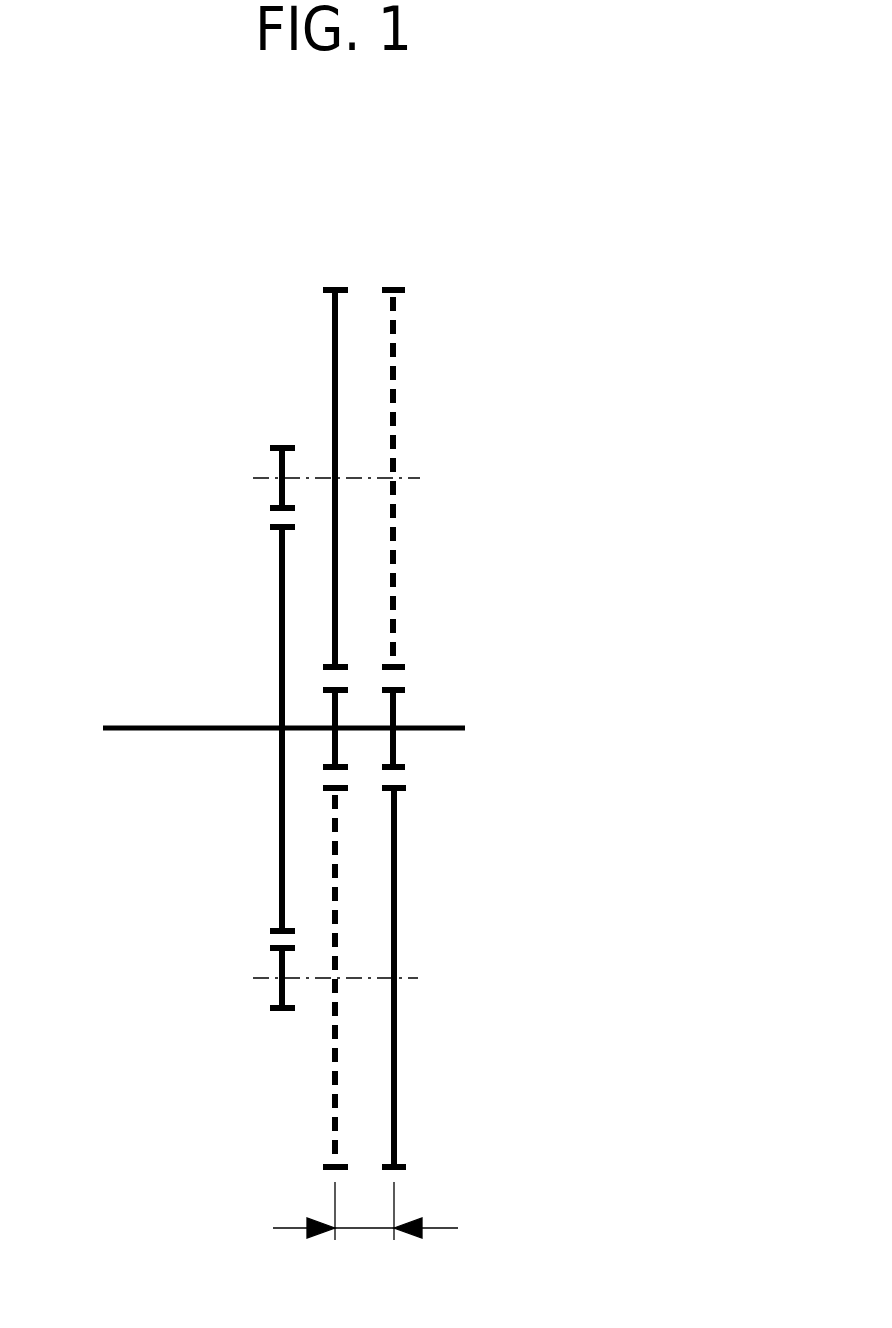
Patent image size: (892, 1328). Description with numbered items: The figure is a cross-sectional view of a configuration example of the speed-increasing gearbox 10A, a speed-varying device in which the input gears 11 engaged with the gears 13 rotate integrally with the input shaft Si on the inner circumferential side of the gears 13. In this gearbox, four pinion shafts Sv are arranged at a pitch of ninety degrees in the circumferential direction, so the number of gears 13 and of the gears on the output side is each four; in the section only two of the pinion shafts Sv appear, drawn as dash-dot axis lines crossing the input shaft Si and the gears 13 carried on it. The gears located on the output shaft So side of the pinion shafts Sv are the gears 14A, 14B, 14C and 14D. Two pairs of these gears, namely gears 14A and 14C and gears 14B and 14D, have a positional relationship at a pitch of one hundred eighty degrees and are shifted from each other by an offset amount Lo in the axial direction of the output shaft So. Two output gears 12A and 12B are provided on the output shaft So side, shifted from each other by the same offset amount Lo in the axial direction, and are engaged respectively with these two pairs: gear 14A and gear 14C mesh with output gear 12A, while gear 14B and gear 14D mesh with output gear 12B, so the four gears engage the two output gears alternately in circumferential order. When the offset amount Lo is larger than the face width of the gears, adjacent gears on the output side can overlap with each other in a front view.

The speed-increasing gearbox 10A is at (612, 295).
The input gear 11 is at (275, 932).
The output gear 12A is at (333, 706).
The output gear 12B is at (397, 702).
The gear 13 is at (280, 445).
The gear 14A is at (330, 284).
The gear 14B is at (392, 287).
The gear 14C is at (328, 1168).
The gear 14D is at (398, 1138).
The input shaft Si is at (132, 722).
The output shaft So is at (444, 731).
The pinion shaft Sv is at (388, 478).
The offset amount Lo is at (365, 1232).